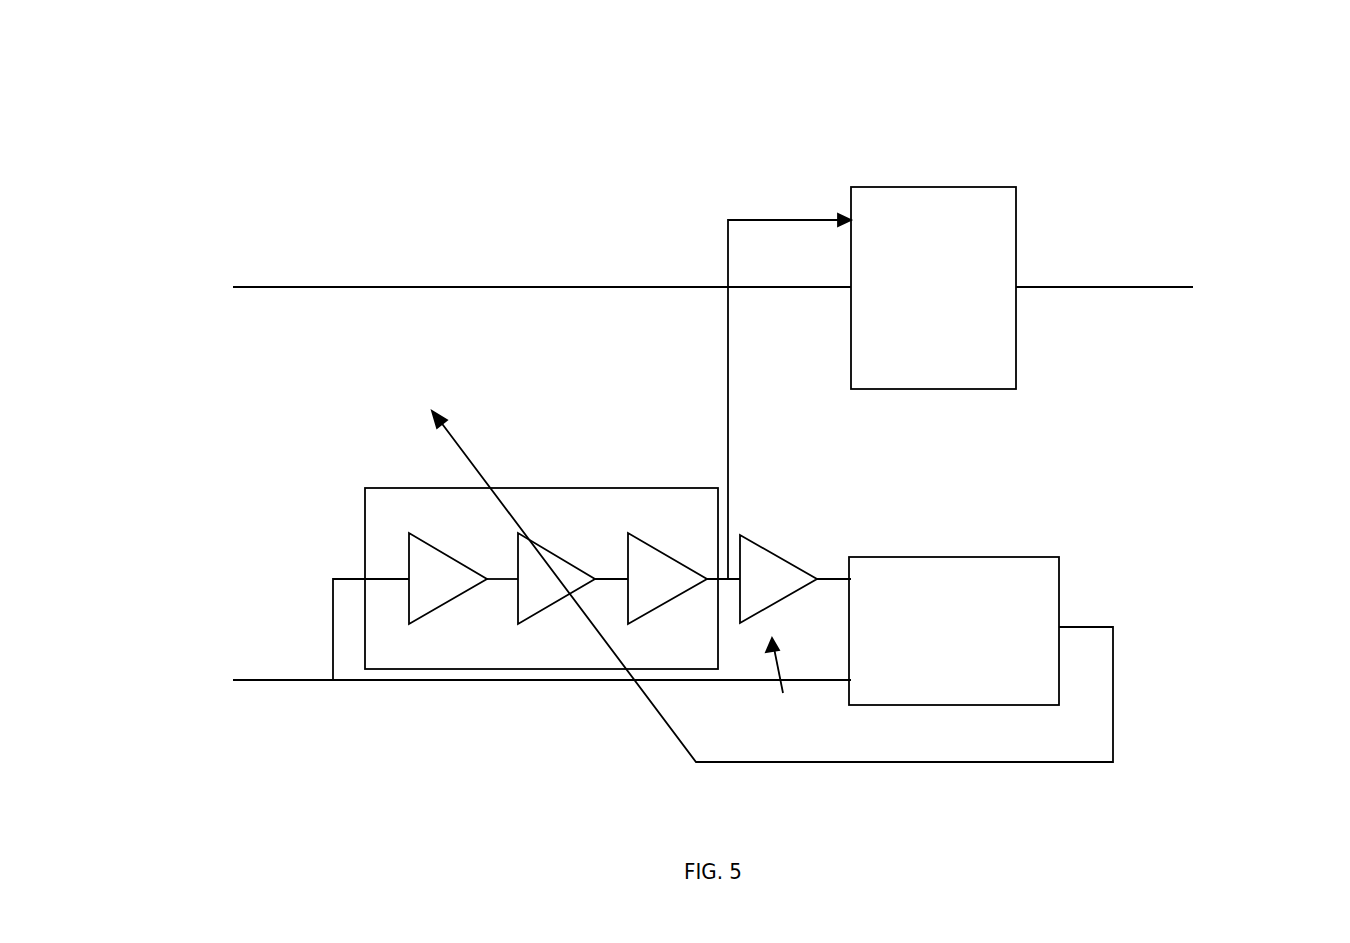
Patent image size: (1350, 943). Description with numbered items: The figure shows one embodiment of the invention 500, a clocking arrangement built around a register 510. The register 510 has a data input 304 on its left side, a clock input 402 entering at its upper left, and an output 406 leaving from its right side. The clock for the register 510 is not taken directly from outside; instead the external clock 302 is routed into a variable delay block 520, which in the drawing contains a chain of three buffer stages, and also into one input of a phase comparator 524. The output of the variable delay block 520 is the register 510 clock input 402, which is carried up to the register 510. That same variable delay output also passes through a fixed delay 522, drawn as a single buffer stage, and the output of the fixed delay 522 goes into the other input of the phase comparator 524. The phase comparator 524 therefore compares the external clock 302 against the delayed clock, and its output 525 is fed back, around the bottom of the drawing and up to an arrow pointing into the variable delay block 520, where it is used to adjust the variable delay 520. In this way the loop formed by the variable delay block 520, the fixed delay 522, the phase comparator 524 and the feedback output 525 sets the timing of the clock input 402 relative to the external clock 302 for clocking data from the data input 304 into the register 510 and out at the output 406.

The embodiment of the invention 500 is at (1147, 68).
The data input Dx 304 is at (493, 289).
The output Yx' 406 is at (1178, 286).
The register 510 is at (933, 309).
The clock input Clkint 402 is at (789, 377).
The external clock Clk 302 is at (499, 650).
The variable delay block 520 is at (551, 599).
The fixed delay 522 is at (814, 628).
The phase comparator 524 is at (954, 617).
The output of phase comparator 525 is at (780, 586).